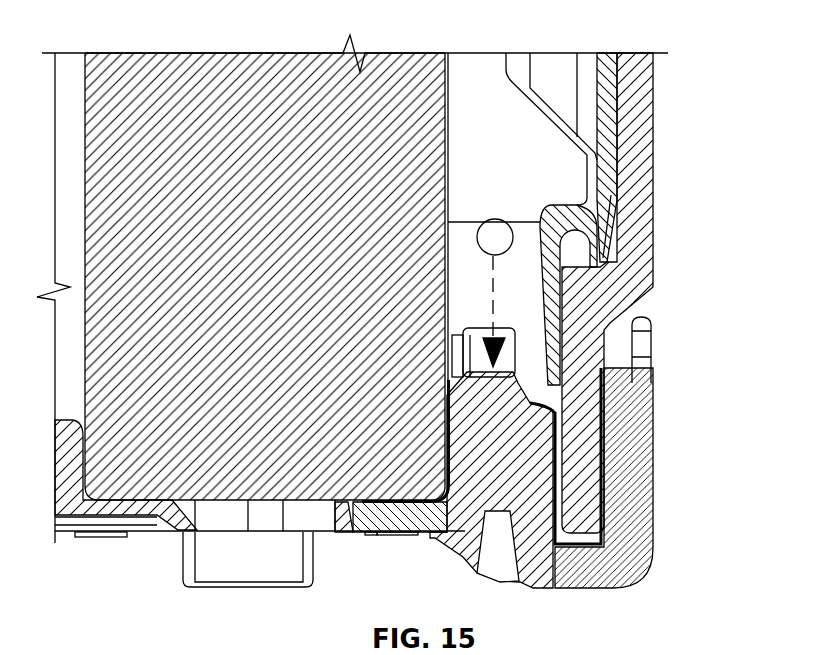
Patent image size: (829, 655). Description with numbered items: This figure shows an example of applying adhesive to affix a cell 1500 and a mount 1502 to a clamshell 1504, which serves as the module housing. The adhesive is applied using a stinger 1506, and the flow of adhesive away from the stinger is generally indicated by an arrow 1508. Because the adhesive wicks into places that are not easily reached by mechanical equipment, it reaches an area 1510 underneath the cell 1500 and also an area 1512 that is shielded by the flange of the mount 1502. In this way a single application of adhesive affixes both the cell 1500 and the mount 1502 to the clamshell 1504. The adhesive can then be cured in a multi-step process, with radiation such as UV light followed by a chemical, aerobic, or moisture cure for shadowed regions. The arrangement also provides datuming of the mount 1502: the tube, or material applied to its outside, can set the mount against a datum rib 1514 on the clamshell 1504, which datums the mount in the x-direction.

The cell 1500 is at (450, 168).
The mount 1502 is at (580, 493).
The clamshell 1504 is at (460, 547).
The stinger 1506 is at (493, 217).
The arrow 1508 is at (505, 312).
The area underneath the cell 1510 is at (378, 489).
The area shielded by the flange of the mount 1512 is at (600, 515).
The datum rib 1514 is at (643, 387).